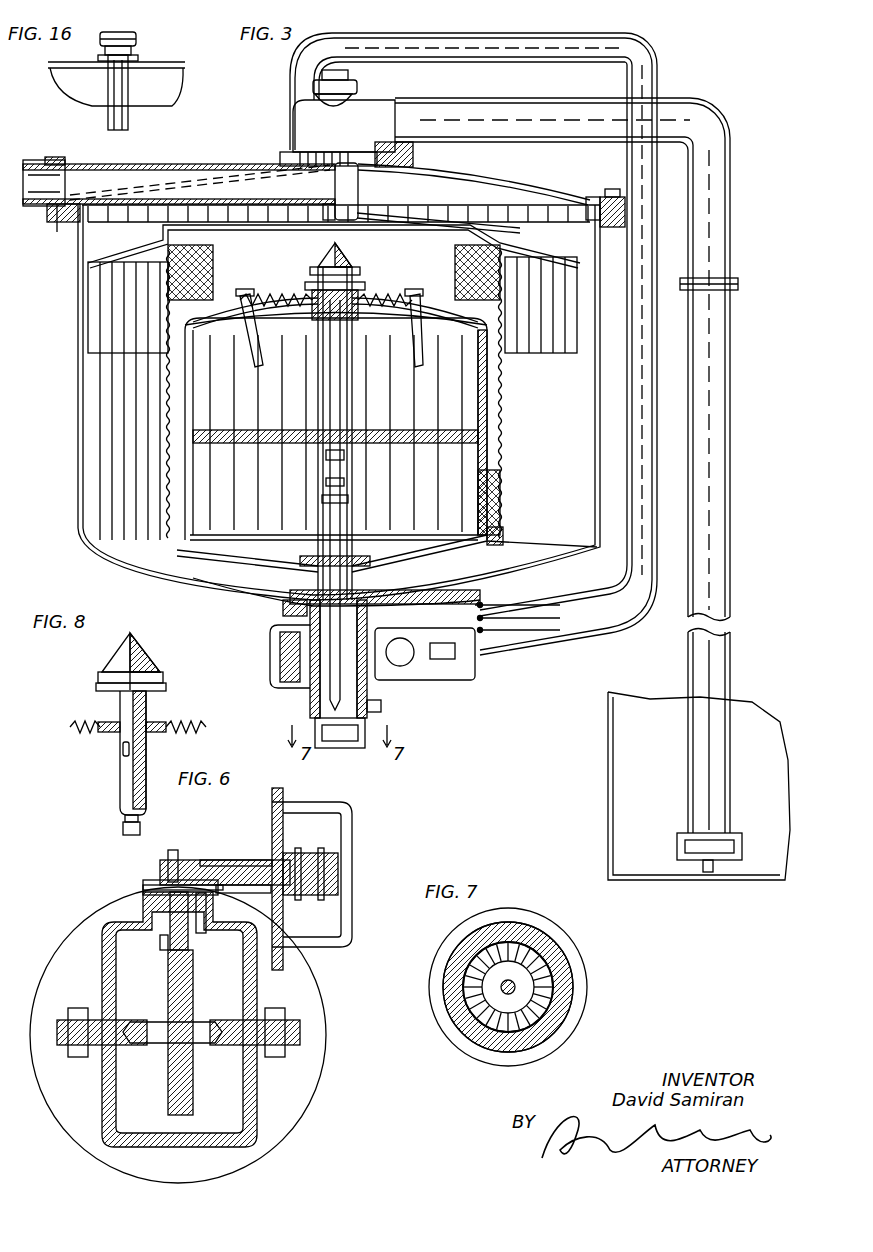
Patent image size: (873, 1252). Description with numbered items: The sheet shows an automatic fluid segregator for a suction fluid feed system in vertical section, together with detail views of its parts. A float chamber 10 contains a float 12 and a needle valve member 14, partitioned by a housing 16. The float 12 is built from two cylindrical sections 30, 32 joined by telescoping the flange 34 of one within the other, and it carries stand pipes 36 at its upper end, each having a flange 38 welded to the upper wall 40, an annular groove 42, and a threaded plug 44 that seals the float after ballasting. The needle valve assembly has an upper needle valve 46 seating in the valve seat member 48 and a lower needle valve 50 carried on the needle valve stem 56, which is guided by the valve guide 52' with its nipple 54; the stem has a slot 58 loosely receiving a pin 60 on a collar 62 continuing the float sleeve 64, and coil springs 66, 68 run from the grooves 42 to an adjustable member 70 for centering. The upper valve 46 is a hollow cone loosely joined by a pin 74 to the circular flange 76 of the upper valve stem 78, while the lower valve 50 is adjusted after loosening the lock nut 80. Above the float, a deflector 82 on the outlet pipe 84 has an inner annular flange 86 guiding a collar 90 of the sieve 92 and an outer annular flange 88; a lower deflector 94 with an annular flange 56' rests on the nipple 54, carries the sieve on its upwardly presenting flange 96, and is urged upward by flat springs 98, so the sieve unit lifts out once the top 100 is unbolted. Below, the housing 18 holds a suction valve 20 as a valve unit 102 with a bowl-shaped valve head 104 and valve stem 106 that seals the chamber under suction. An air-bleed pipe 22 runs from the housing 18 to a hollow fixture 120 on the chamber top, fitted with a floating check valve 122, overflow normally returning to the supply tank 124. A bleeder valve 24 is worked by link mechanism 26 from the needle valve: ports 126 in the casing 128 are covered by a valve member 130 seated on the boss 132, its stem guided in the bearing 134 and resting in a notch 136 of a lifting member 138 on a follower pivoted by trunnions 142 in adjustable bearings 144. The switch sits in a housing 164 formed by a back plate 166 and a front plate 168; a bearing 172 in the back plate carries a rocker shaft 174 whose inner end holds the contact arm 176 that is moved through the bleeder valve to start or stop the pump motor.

In FIG. 3, the float chamber 10 is at (560, 423).
In FIG. 3, the float 12 is at (490, 407).
In FIG. 3, the needle valve member 14 is at (340, 408).
In FIG. 3, the housing 16 is at (430, 240).
In FIG. 3, the housing 18 is at (338, 674).
In FIG. 3, the suction valve 20 is at (372, 706).
In FIG. 3, the air-bleed pipe 22 is at (645, 82).
In FIG. 3, the bleeder valve 24 is at (440, 622).
In FIG. 3, the link mechanism 26 is at (290, 655).
In FIG. 3, the cylindrical section 30 is at (500, 492).
In FIG. 3, the cylindrical section 32 is at (488, 377).
In FIG. 3, the flange 34 is at (468, 426).
In FIG. 3, the stand pipe 36 is at (264, 358).
In FIG. 16, the flange 38 is at (138, 58).
In FIG. 16, the upper wall 40 is at (170, 74).
In FIG. 3, the upper wall 40 is at (440, 318).
In FIG. 16, the annular groove 42 is at (131, 52).
In FIG. 16, the threaded plug 44 is at (136, 41).
In FIG. 3, the upper needle valve 46 is at (346, 250).
In FIG. 8, the upper needle valve 46 is at (142, 655).
In FIG. 3, the valve seat member 48 is at (340, 200).
In FIG. 3, the lower needle valve 50 is at (352, 552).
In FIG. 3, the valve guide 52' is at (364, 459).
In FIG. 3, the nipple 54 is at (300, 610).
In FIG. 3, the needle valve stem 56 is at (335, 340).
In FIG. 8, the needle valve stem 56 is at (114, 819).
In FIG. 3, the annular flange 56' is at (385, 587).
In FIG. 8, the slot 58 is at (122, 750).
In FIG. 3, the pin 60 is at (318, 334).
In FIG. 3, the collar 62 is at (360, 291).
In FIG. 3, the float sleeve 64 is at (350, 483).
In FIG. 3, the coil spring 66 is at (410, 292).
In FIG. 3, the coil spring 68 is at (268, 292).
In FIG. 3, the adjustable member 70 is at (316, 293).
In FIG. 8, the adjustable member 70 is at (158, 722).
In FIG. 8, the pin 74 is at (160, 679).
In FIG. 8, the circular flange 76 is at (100, 689).
In FIG. 8, the upper valve stem 78 is at (122, 708).
In FIG. 3, the lock nut 80 is at (352, 500).
In FIG. 3, the deflector 82 is at (390, 210).
In FIG. 3, the outlet pipe 84 is at (226, 174).
In FIG. 3, the inner annular flange 86 is at (612, 232).
In FIG. 3, the outer annular flange 88 is at (565, 306).
In FIG. 3, the collar 90 is at (500, 235).
In FIG. 3, the sieve 92 is at (504, 318).
In FIG. 3, the lower deflector 94 is at (470, 560).
In FIG. 3, the upwardly presenting flange 96 is at (503, 537).
In FIG. 3, the flat spring 98 is at (212, 588).
In FIG. 3, the top 100 is at (492, 176).
In FIG. 7, the valve unit 102 is at (478, 1040).
In FIG. 7, the valve head 104 is at (528, 952).
In FIG. 7, the valve stem 106 is at (520, 988).
In FIG. 3, the hollow fixture 120 is at (346, 133).
In FIG. 3, the check valve 122 is at (318, 96).
In FIG. 3, the supply tank 124 is at (592, 489).
In FIG. 6, the ports 126 is at (162, 928).
In FIG. 6, the casing 128 is at (179, 1019).
In FIG. 6, the valve member 130 is at (146, 884).
In FIG. 6, the boss 132 is at (146, 890).
In FIG. 6, the bearing 134 is at (198, 935).
In FIG. 6, the notch 136 is at (163, 950).
In FIG. 6, the lifting member 138 is at (166, 1007).
In FIG. 6, the trunnions 142 is at (160, 1045).
In FIG. 6, the bearings 144 is at (60, 1020).
In FIG. 6, the housing 164 is at (312, 875).
In FIG. 6, the back plate 166 is at (283, 908).
In FIG. 6, the front plate 168 is at (352, 840).
In FIG. 6, the bearing 172 is at (268, 895).
In FIG. 6, the rocker shaft 174 is at (222, 860).
In FIG. 6, the contact arm 176 is at (340, 870).